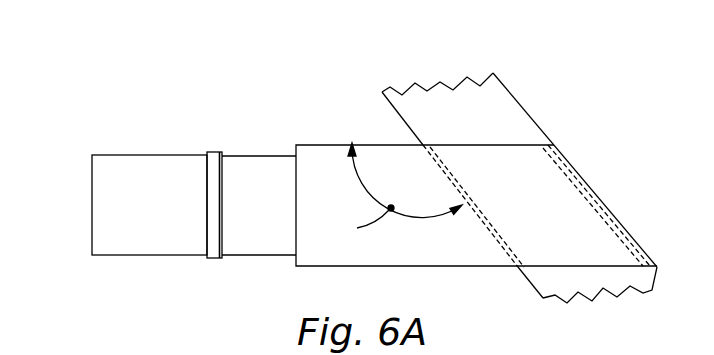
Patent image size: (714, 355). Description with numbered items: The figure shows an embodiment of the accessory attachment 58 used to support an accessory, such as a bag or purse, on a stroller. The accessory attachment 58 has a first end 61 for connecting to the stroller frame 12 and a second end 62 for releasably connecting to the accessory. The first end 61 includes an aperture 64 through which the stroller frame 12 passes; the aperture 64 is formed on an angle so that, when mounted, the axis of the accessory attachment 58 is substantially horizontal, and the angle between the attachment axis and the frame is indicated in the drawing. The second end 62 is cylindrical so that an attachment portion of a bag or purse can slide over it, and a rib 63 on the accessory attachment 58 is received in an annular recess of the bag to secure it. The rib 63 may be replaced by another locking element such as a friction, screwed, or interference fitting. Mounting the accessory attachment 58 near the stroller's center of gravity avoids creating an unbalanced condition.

The accessory attachment 58 is at (176, 70).
The second end 62 is at (100, 211).
The rib 63 is at (210, 224).
The stroller frame 12 is at (520, 105).
The first end 61 is at (582, 208).
The aperture 64 is at (460, 220).